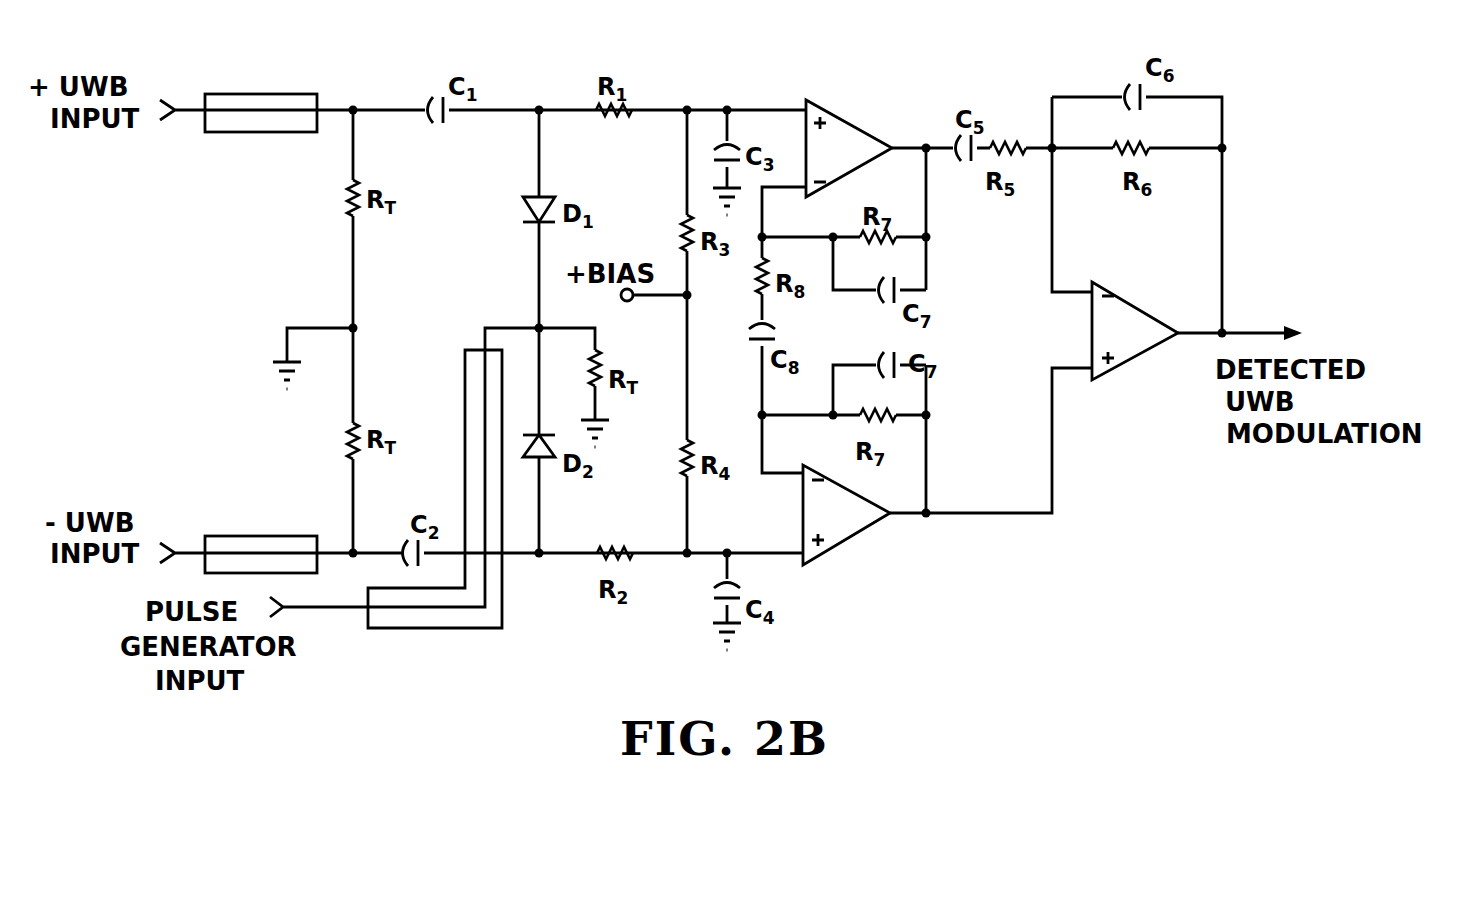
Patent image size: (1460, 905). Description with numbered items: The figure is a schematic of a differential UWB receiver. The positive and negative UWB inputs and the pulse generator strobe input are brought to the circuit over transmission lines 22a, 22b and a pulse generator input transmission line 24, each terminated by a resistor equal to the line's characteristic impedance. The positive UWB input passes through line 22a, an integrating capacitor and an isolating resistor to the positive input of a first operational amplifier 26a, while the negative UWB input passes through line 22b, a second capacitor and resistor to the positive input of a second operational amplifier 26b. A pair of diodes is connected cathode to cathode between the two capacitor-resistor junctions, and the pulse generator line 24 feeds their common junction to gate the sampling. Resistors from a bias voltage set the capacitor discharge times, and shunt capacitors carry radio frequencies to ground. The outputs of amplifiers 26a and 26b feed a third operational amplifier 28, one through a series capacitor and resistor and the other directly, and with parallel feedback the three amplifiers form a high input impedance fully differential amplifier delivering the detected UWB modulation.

The transmission line 22a is at (262, 93).
The transmission line 22b is at (262, 535).
The pulse generator input transmission line 24 is at (504, 592).
The first operational amplifier 26a is at (870, 124).
The second operational amplifier 26b is at (842, 545).
The third operational amplifier 28 is at (1122, 366).